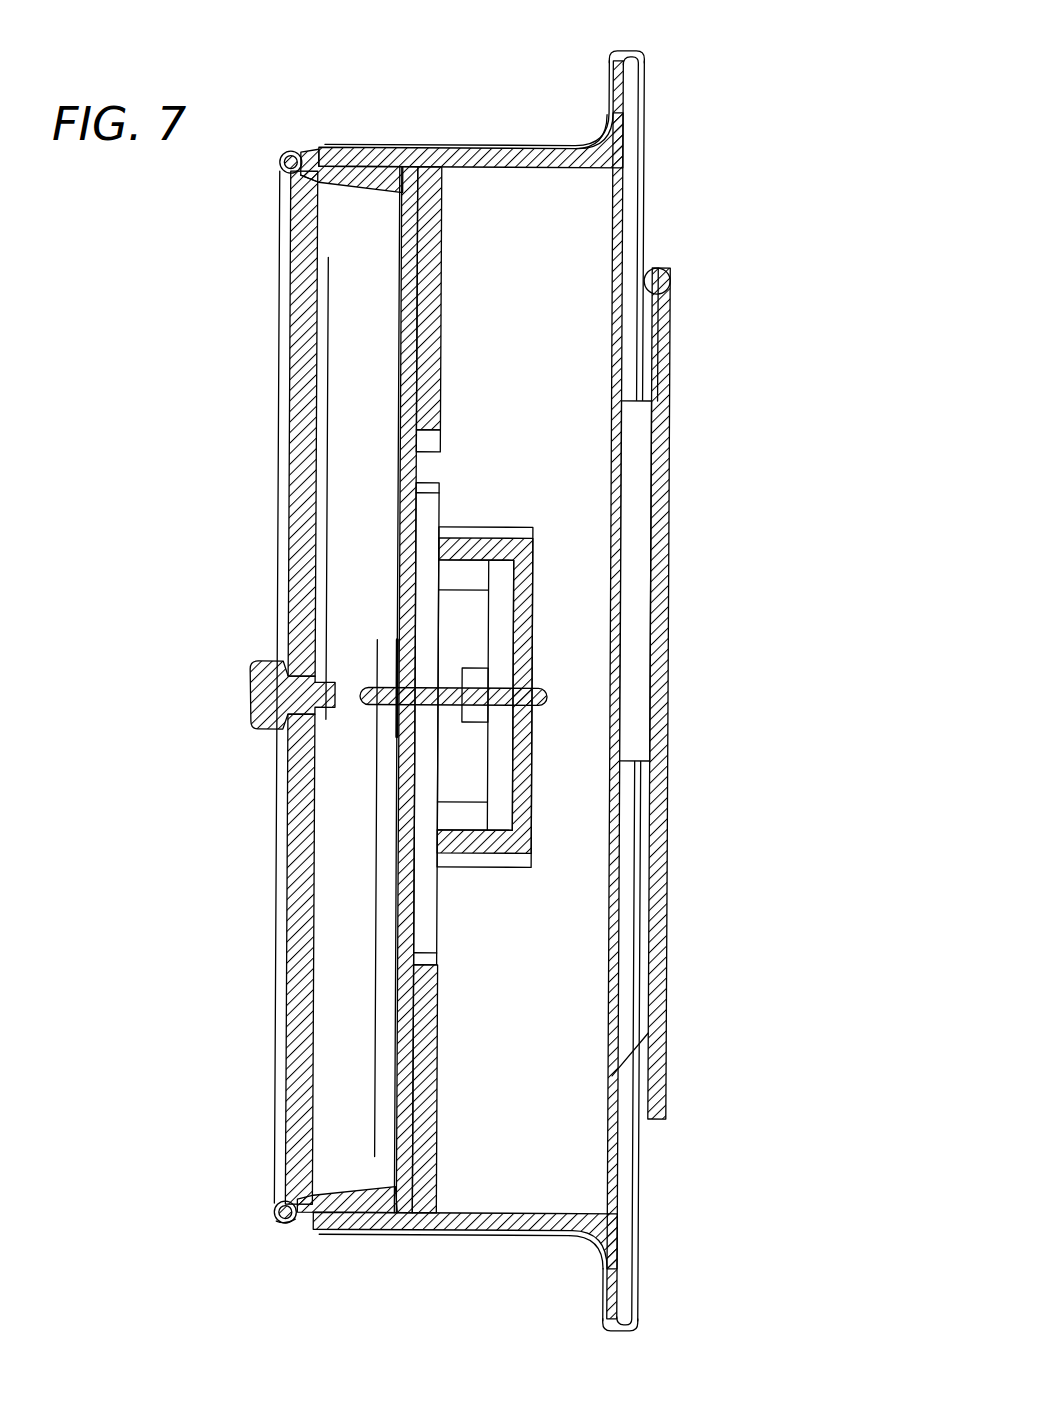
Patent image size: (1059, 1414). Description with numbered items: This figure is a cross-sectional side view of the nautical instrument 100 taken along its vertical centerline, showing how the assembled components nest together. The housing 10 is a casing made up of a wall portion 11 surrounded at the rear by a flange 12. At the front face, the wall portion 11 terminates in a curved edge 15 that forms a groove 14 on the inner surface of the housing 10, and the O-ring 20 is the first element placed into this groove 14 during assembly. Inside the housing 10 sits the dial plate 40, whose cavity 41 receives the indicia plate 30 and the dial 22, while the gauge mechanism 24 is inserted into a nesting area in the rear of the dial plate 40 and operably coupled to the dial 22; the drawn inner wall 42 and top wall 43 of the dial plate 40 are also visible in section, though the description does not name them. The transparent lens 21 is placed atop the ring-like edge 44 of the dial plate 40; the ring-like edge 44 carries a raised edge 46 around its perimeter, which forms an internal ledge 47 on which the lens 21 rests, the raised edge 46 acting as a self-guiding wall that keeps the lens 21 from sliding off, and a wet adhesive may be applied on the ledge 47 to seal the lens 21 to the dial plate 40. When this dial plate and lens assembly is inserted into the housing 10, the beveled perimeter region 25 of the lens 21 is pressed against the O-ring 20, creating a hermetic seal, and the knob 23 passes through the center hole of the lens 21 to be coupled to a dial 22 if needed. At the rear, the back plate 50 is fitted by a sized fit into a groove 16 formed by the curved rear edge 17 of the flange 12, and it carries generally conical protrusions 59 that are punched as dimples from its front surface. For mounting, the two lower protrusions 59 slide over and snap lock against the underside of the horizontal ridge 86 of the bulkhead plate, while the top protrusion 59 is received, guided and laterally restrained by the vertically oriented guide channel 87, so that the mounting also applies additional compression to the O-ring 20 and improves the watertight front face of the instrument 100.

The nautical instrument 100 is at (750, 124).
The housing 10 is at (461, 1244).
The wall portion 11 is at (403, 1233).
The flange 12 is at (604, 97).
The groove 14 is at (279, 158).
The curved edge 15 is at (280, 1219).
The groove 16 is at (627, 68).
The curved rear edge 17 is at (637, 55).
The O-ring 20 is at (293, 156).
The lens 21 is at (298, 573).
The dial 22 is at (327, 505).
The knob 23 is at (245, 699).
The gauge mechanism 24 is at (488, 519).
The beveled perimeter region 25 is at (302, 179).
The indicia plate 30 is at (398, 431).
The dial plate 40 is at (496, 1203).
The cavity 41 is at (352, 276).
The inner wall 42 is at (439, 235).
The top wall 43 is at (452, 148).
The ring-like edge 44 is at (309, 184).
The raised edge 46 is at (309, 1228).
The ledge 47 is at (333, 165).
The back plate 50 is at (612, 235).
The protrusion 59 is at (643, 1033).
The horizontal ridge 86 is at (647, 1035).
The guide channel 87 is at (658, 268).